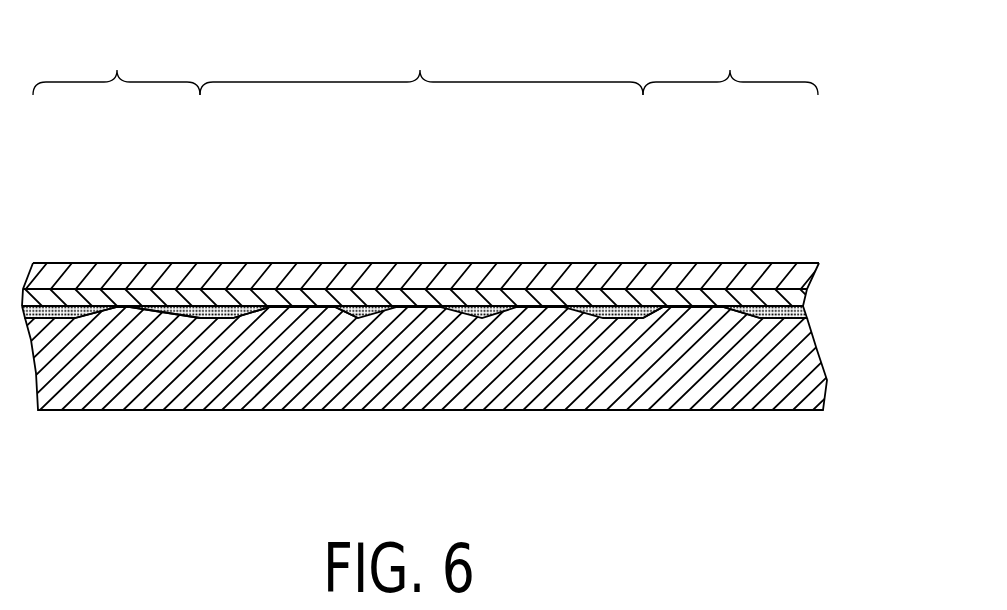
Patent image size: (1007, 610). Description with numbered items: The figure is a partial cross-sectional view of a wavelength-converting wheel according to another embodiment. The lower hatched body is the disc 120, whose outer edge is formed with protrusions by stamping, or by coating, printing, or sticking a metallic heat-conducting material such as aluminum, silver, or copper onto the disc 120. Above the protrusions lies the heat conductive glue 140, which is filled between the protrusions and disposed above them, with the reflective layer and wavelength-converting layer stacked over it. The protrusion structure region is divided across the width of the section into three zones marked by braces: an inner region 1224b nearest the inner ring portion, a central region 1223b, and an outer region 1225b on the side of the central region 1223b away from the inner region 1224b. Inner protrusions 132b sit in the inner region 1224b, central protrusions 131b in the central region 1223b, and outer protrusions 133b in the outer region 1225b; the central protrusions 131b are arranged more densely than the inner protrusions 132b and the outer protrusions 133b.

The disc 120 is at (118, 385).
The heat conductive glue 140 is at (807, 317).
The central protrusions 131b is at (300, 312).
The inner protrusions 132b is at (137, 312).
The outer protrusions 133b is at (702, 312).
The central region 1223b is at (421, 59).
The inner region 1224b is at (116, 59).
The outer region 1225b is at (730, 59).